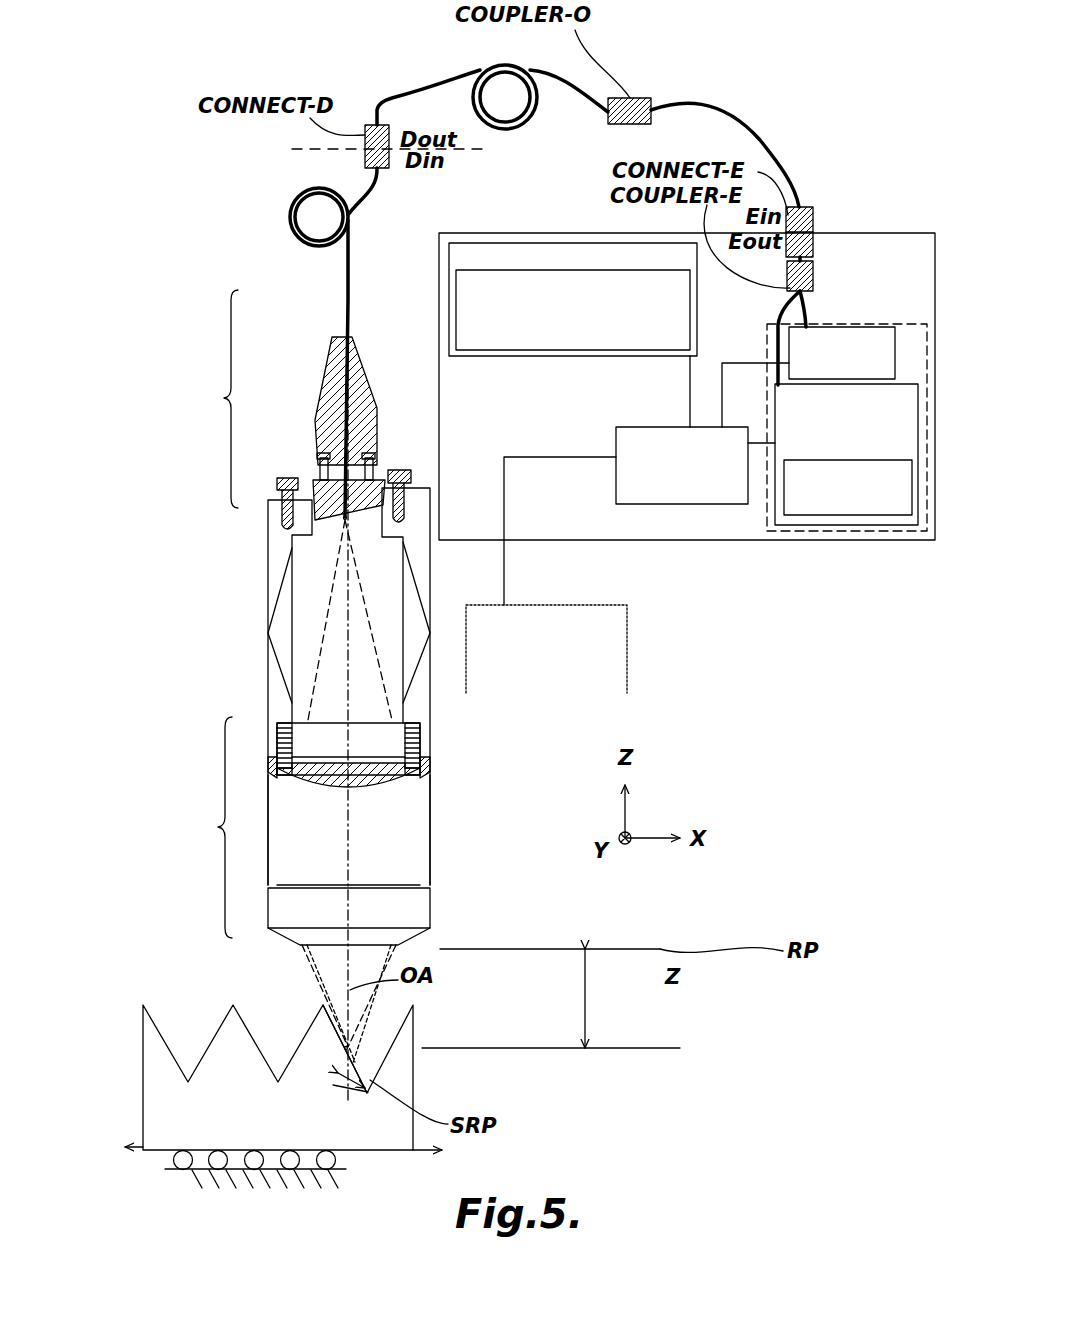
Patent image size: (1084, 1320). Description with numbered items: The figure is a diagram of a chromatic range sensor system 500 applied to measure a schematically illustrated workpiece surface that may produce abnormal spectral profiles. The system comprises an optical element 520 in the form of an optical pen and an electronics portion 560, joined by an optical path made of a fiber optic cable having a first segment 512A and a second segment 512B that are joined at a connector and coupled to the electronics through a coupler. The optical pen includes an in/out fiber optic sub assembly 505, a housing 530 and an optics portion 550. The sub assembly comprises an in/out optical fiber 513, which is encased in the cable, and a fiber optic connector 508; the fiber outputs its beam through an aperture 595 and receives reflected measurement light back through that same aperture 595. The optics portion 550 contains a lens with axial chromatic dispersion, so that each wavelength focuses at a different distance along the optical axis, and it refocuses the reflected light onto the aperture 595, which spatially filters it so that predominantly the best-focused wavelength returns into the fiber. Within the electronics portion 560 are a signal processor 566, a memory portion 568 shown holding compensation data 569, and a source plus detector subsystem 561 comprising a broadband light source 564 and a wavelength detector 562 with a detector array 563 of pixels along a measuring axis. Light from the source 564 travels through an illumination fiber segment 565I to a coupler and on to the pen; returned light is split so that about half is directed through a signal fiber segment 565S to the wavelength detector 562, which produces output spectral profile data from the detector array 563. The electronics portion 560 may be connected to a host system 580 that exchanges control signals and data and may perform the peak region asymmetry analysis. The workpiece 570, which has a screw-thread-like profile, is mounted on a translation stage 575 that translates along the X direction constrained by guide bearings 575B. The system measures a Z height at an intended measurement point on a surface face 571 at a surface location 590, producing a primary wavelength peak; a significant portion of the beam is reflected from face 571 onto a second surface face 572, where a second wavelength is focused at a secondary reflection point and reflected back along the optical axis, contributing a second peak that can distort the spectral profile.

The chromatic range sensor system 500 is at (205, 235).
The in/out fiber optic sub assembly 505 is at (277, 423).
The fiber optic connector 508 is at (318, 410).
The first fiber optic cable segment 512A is at (340, 320).
The second fiber optic cable segment 512B is at (578, 108).
The in/out optical fiber 513 is at (320, 485).
The optical element 520 is at (170, 744).
The housing 530 is at (268, 680).
The optics portion 550 is at (301, 831).
The electronics portion 560 is at (685, 541).
The source+detector subsystem 561 is at (890, 532).
The wavelength detector 562 is at (777, 532).
The detector array 563 is at (850, 516).
The broadband light source 564 is at (895, 355).
The illumination fiber segment 565I is at (813, 293).
The signal fiber segment 565S is at (788, 310).
The signal processor 566 is at (616, 490).
The memory portion 568 is at (512, 243).
The compensation data 569 is at (456, 283).
The workpiece 570 is at (155, 1020).
The surface face 571 is at (340, 1030).
The surface face 572 is at (383, 1053).
The translation stage 575 is at (200, 1180).
The guide bearings 575B is at (165, 1163).
The host system 580 is at (628, 650).
The surface location 590 is at (345, 1050).
The aperture 595 is at (345, 520).